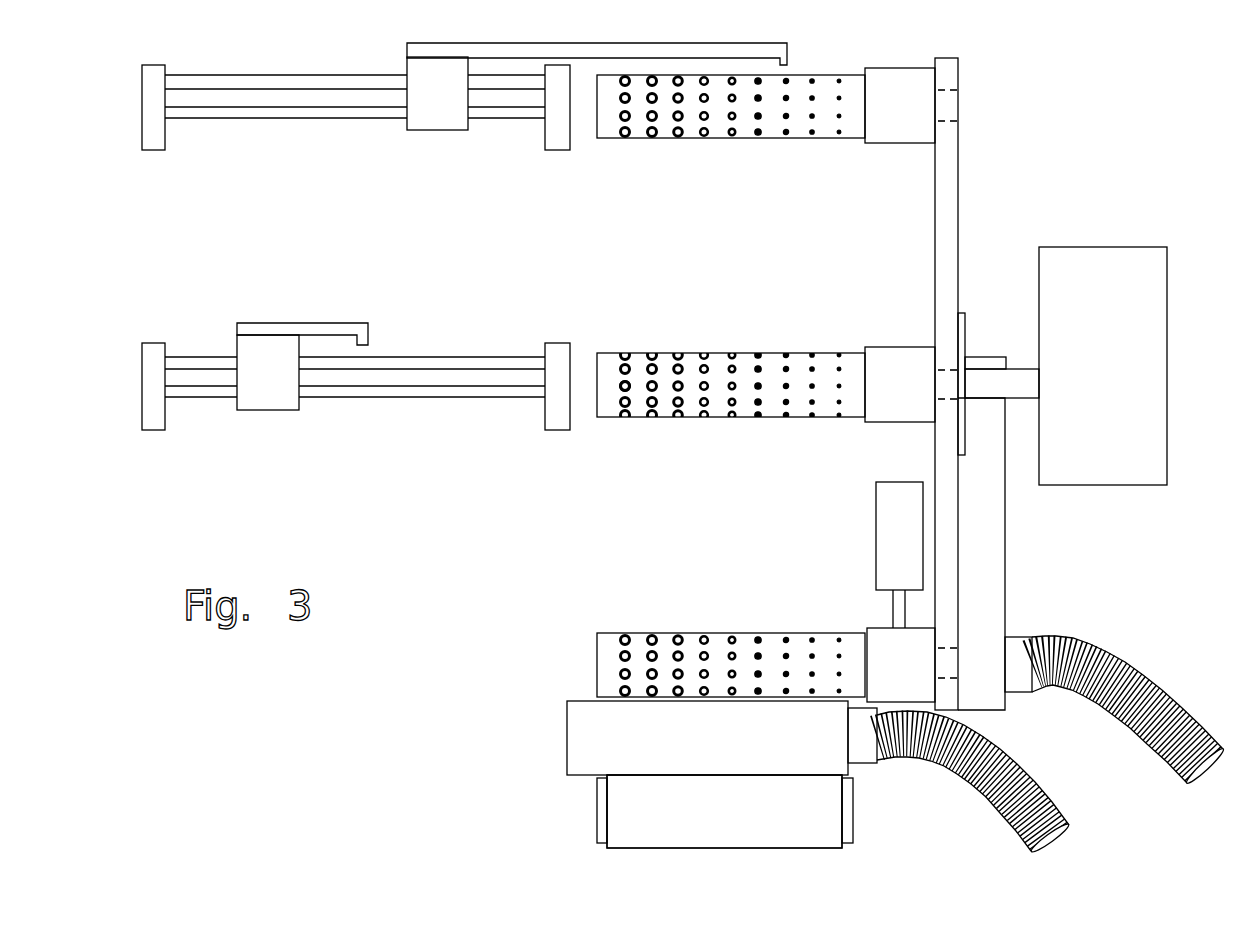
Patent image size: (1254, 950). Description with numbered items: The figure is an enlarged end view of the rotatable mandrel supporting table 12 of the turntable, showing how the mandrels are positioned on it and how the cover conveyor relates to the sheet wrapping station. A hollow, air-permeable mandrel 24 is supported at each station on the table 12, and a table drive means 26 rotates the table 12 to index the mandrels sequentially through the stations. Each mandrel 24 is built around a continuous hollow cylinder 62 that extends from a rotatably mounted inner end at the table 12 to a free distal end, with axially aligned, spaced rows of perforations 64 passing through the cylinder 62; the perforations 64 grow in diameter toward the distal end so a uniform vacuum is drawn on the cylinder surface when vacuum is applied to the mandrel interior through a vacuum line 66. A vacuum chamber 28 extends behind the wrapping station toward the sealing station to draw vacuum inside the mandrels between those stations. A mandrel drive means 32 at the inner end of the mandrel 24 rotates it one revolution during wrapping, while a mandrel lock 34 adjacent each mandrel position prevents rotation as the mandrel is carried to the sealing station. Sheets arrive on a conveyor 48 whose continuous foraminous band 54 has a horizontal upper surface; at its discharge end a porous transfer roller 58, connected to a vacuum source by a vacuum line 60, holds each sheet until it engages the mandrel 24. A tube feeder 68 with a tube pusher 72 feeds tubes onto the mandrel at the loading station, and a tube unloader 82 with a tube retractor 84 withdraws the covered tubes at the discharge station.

The mandrel supporting table 12 is at (948, 167).
The mandrel 24 is at (777, 162).
The table drive means 26 is at (1086, 375).
The vacuum chamber 28 is at (1005, 528).
The mandrel drive means 32 is at (884, 677).
The mandrel lock 34 is at (884, 537).
The conveyor 48 is at (575, 805).
The foraminous band 54 is at (703, 827).
The transfer roller 58 is at (592, 720).
The vacuum line 60 is at (1040, 785).
The hollow cylinder 62 is at (663, 140).
The perforations 64 is at (626, 390).
The vacuum line 66 is at (1148, 677).
The tube feeder 68 is at (455, 155).
The tube pusher 72 is at (672, 47).
The tube unloader 82 is at (348, 442).
The tube retractor 84 is at (342, 330).